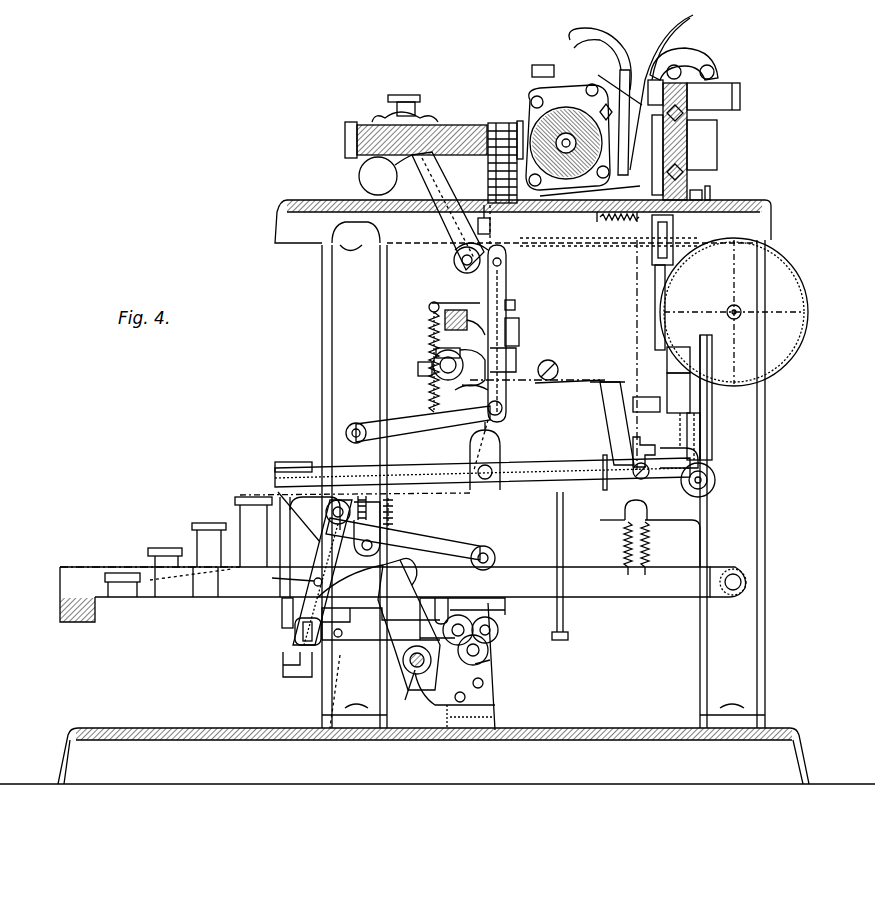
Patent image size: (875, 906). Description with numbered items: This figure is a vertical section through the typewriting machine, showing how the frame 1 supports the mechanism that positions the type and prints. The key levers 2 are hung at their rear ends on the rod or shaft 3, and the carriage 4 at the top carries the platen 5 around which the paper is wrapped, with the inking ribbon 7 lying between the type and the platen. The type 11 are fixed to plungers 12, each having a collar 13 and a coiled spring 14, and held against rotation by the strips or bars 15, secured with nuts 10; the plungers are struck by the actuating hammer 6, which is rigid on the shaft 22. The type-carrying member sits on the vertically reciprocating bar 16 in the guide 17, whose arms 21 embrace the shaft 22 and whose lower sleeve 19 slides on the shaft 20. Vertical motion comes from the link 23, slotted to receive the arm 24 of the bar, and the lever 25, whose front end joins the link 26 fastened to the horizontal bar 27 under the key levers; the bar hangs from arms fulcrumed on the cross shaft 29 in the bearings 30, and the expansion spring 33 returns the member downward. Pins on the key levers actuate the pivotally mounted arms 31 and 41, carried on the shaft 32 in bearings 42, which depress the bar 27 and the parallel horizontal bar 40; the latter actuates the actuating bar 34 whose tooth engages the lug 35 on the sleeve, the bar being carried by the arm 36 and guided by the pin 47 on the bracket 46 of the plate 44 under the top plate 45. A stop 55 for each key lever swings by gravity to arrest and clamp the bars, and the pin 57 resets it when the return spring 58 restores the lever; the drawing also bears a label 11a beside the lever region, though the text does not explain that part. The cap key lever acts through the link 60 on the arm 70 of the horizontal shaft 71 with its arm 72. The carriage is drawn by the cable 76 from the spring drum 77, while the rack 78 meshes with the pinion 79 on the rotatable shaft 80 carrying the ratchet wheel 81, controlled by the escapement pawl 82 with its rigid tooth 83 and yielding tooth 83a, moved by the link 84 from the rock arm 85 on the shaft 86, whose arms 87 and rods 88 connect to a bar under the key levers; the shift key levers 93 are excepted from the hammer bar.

The frame 1 is at (320, 346).
The key levers 2 is at (622, 598).
The rod or shaft 3 is at (733, 592).
The carriage 4 is at (600, 55).
The platen 5 is at (530, 115).
The actuating hammer 6 is at (358, 178).
The inking ribbon 7 is at (365, 128).
The nuts 10 is at (461, 641).
The type 11 is at (378, 625).
The lever arm 11a is at (414, 572).
The plungers 12 is at (422, 669).
The collar 13 is at (370, 625).
The coiled spring 14 is at (470, 495).
The strips or bars 15 is at (285, 202).
The vertically reciprocating bar 16 is at (505, 410).
The guide 17 is at (470, 392).
The sleeve 19 is at (497, 360).
The shaft 20 is at (432, 375).
The arms 21 is at (497, 126).
The shaft 22 is at (454, 260).
The link 23 is at (502, 446).
The extension or arm 24 is at (472, 460).
The lever 25 is at (410, 541).
The link 26 is at (295, 550).
The horizontal bar 27 is at (295, 630).
The cross shaft 29 is at (499, 632).
The bearings 30 is at (497, 710).
The pivotally mounted arms 31 is at (282, 610).
The shaft 32 is at (404, 694).
The expansion spring 33 is at (253, 532).
The actuating bar 34 is at (445, 325).
The lug 35 is at (434, 357).
The arm 36 is at (340, 500).
The horizontal bar 40 is at (297, 675).
The pivotally mounted arms 41 is at (508, 290).
The bearings 42 is at (441, 343).
The plate 44 is at (610, 242).
The top plate 45 is at (418, 428).
The bracket 46 is at (520, 330).
The pin 47 is at (432, 307).
The stop 55 is at (298, 655).
The pin 57 is at (286, 584).
The return spring 58 is at (628, 540).
The link 60 is at (432, 602).
The arm 70 is at (492, 246).
The horizontal shaft 71 is at (490, 660).
The arm 72 is at (450, 612).
The cable 76 is at (656, 272).
The spring drum 77 is at (790, 318).
The rack 78 is at (695, 185).
The pinion 79 is at (710, 200).
The rotatable shaft 80 is at (708, 412).
The ratchet wheel 81 is at (683, 436).
The escapement pawl 82 is at (612, 350).
The rigid tooth 83 is at (667, 352).
The yielding tooth 83a is at (659, 410).
The link 84 is at (614, 420).
The rock arm 85 is at (650, 532).
The shaft 86 is at (715, 490).
The arms 87 is at (604, 488).
The rods 88 is at (557, 540).
The shift key levers 93 is at (80, 570).